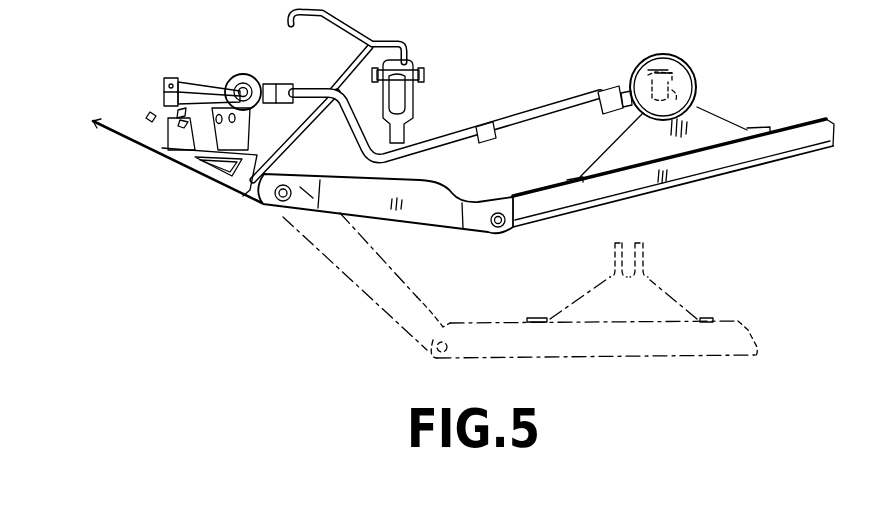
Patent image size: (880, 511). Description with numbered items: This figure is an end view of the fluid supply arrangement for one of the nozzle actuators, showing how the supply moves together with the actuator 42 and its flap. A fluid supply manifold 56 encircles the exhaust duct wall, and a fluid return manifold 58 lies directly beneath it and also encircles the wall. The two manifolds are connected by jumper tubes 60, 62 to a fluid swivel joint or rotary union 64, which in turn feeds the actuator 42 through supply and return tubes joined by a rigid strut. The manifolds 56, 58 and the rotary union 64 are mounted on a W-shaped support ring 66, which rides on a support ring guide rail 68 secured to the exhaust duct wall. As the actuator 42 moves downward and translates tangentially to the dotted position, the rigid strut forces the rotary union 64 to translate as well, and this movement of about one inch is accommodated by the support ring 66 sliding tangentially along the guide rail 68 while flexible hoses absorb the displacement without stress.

The actuator 42 is at (689, 66).
The fluid supply manifold 56 is at (163, 77).
The fluid return manifold 58 is at (158, 100).
The jumper tube 60 is at (190, 78).
The jumper tube 62 is at (213, 88).
The rotary union 64 is at (262, 84).
The support ring 66 is at (170, 134).
The support ring guide rail 68 is at (200, 134).